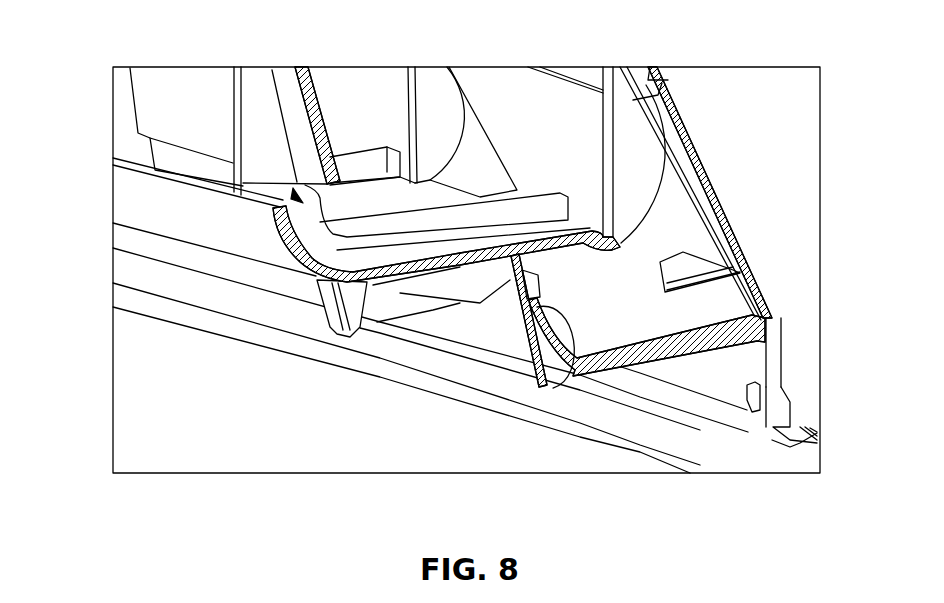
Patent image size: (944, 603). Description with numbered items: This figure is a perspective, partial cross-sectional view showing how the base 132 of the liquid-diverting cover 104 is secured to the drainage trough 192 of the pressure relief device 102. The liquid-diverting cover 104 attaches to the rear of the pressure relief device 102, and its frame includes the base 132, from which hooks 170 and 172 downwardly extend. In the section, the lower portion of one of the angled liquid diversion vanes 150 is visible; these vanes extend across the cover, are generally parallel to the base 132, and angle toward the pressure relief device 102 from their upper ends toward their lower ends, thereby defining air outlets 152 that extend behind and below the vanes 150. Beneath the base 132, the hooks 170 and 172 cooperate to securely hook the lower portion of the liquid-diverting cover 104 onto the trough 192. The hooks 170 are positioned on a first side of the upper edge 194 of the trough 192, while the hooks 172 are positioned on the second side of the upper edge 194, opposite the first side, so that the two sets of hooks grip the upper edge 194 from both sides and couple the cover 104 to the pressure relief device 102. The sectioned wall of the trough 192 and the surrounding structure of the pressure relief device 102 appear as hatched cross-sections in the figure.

The pressure relief device 102 is at (700, 377).
The liquid-diverting cover 104 is at (113, 188).
The base 132 is at (360, 333).
The liquid diversion vanes 150 is at (325, 118).
The air outlets 152 is at (296, 193).
The hooks 170 is at (660, 262).
The hooks 172 is at (477, 290).
The drainage trough 192 is at (523, 290).
The upper edge 194 is at (567, 345).